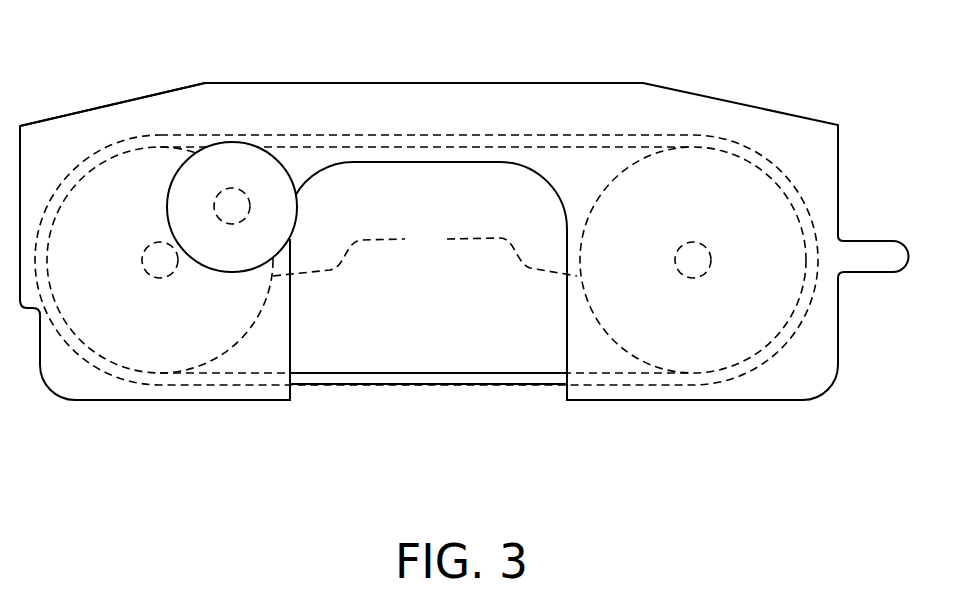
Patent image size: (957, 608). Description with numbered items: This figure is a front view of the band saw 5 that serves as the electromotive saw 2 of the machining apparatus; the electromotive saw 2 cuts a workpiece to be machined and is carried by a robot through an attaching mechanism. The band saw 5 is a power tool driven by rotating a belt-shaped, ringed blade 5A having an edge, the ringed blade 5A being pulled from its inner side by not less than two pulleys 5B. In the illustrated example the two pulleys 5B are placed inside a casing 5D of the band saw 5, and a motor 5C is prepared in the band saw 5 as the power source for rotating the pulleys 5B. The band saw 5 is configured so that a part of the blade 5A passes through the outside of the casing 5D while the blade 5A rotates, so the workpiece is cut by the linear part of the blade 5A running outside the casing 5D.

The electromotive saw 2 is at (536, 72).
The band saw 5 is at (447, 72).
The blade 5A is at (428, 372).
The pulleys 5B is at (425, 250).
The motor 5C is at (297, 216).
The casing 5D is at (115, 103).